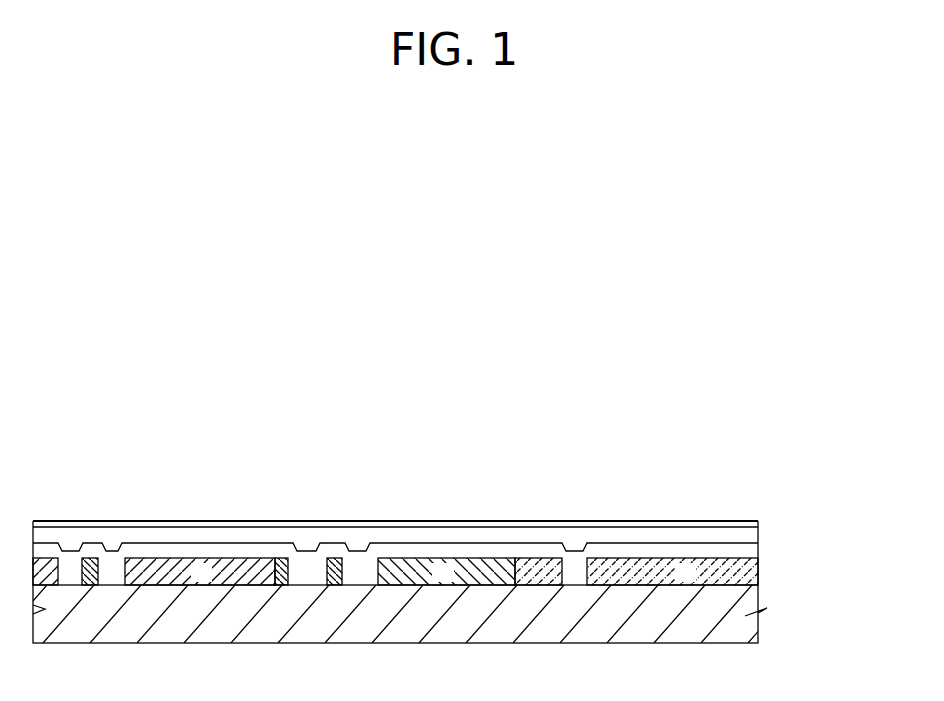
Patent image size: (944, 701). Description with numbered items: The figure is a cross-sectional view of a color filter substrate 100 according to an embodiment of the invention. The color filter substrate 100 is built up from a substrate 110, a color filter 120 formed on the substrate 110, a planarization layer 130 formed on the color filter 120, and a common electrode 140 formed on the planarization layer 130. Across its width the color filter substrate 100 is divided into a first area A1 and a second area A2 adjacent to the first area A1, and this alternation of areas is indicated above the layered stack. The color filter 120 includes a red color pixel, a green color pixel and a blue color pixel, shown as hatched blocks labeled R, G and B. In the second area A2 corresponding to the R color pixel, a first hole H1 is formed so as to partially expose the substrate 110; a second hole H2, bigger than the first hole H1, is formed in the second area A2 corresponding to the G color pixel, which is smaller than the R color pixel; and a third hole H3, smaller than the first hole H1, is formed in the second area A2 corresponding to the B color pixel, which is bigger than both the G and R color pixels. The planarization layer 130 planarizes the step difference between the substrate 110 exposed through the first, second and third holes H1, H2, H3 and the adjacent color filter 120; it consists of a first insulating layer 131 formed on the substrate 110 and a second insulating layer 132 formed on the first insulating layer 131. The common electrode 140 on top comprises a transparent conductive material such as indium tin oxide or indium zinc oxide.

The color filter substrate 100 is at (433, 338).
The substrate 110 is at (683, 630).
The color filter 120 is at (755, 572).
The planarization layer 130 is at (467, 556).
The first insulating layer 131 is at (753, 554).
The second insulating layer 132 is at (753, 541).
The common electrode 140 is at (757, 524).
The first hole H1 is at (74, 578).
The second hole H2 is at (319, 579).
The third hole H3 is at (579, 579).
The first area A1 is at (273, 422).
The second area A2 is at (150, 443).